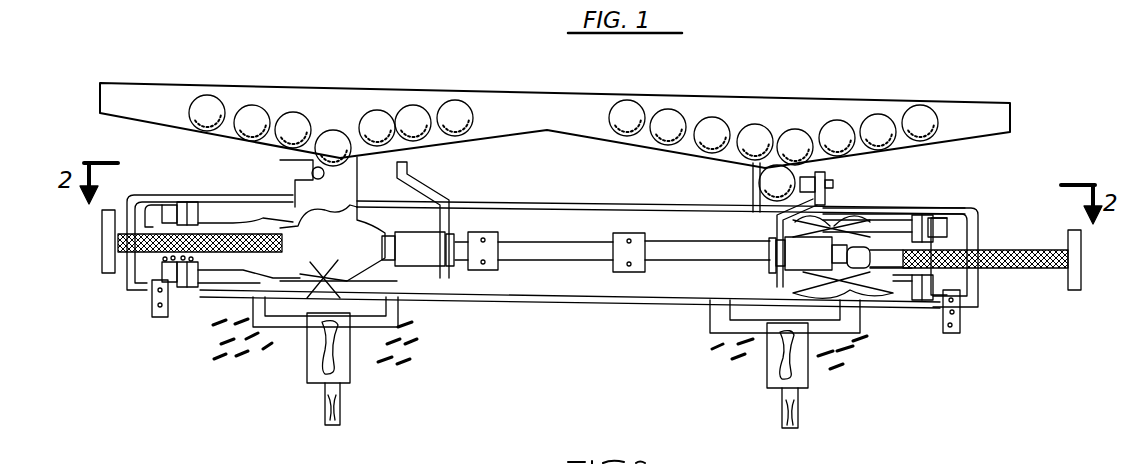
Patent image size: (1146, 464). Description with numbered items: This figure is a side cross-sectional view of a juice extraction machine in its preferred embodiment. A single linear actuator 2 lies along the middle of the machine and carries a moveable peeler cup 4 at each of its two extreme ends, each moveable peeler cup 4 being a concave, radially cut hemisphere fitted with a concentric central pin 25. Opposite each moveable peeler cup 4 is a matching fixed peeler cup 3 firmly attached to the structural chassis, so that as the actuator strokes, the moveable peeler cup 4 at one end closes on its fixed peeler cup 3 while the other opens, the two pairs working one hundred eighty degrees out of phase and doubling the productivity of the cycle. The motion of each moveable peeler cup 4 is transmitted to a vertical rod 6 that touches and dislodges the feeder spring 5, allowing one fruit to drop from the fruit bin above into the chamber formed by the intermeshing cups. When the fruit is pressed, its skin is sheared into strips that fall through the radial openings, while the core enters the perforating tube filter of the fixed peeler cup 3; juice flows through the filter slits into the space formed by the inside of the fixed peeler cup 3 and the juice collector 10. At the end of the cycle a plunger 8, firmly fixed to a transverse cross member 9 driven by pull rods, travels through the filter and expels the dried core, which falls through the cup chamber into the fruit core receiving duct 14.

The linear actuator 2 is at (527, 263).
The fixed peeler cup 3 is at (244, 208).
The moveable peeler cup 4 is at (403, 273).
The feeder spring 5 is at (308, 174).
The vertical rod 6 is at (408, 178).
The plunger 8 is at (1037, 266).
The transverse cross member 9 is at (1077, 290).
The juice collector 10 is at (158, 312).
The fruit core receiving duct 14 is at (807, 392).
The concentric central pin 25 is at (423, 253).